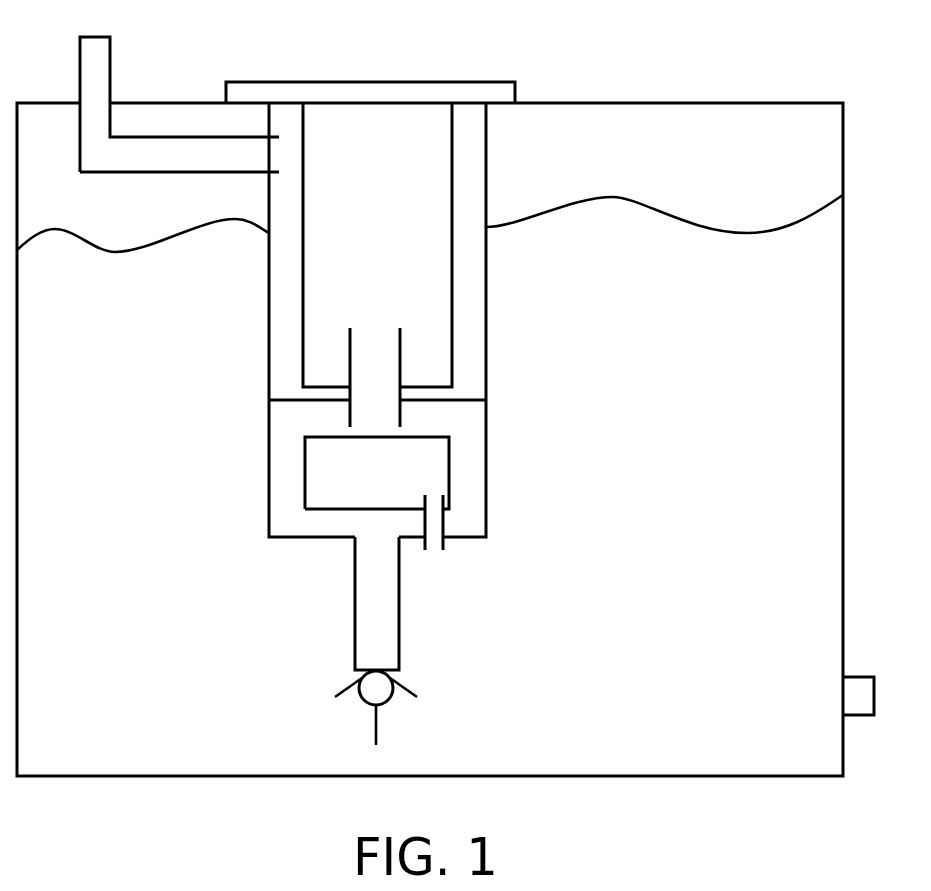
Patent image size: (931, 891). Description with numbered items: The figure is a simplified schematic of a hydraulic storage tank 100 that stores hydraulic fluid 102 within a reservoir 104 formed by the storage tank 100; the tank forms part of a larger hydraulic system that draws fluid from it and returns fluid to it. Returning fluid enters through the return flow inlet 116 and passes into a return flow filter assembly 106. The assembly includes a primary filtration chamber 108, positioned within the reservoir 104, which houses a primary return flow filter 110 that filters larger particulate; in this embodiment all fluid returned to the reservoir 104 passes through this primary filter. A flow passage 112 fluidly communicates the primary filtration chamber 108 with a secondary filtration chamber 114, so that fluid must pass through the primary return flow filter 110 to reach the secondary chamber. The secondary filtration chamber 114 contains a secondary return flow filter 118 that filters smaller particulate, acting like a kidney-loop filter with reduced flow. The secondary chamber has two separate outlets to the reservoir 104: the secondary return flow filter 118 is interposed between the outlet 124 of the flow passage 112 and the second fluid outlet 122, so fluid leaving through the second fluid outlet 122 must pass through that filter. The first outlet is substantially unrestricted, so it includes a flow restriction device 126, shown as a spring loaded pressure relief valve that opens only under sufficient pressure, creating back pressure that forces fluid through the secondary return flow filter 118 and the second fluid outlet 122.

The hydraulic storage tank 100 is at (730, 80).
The hydraulic fluid 102 is at (668, 213).
The reservoir 104 is at (734, 461).
The return flow filter assembly 106 is at (537, 143).
The primary filtration chamber 108 is at (486, 297).
The primary return flow filter 110 is at (452, 166).
The flow passage 112 is at (400, 352).
The secondary filtration chamber 114 is at (486, 442).
The return flow inlet 116 is at (167, 150).
The secondary return flow filter 118 is at (313, 510).
The second fluid outlet 122 is at (438, 555).
The outlet of the flow passage 124 is at (375, 425).
The flow restriction device 126 is at (352, 705).